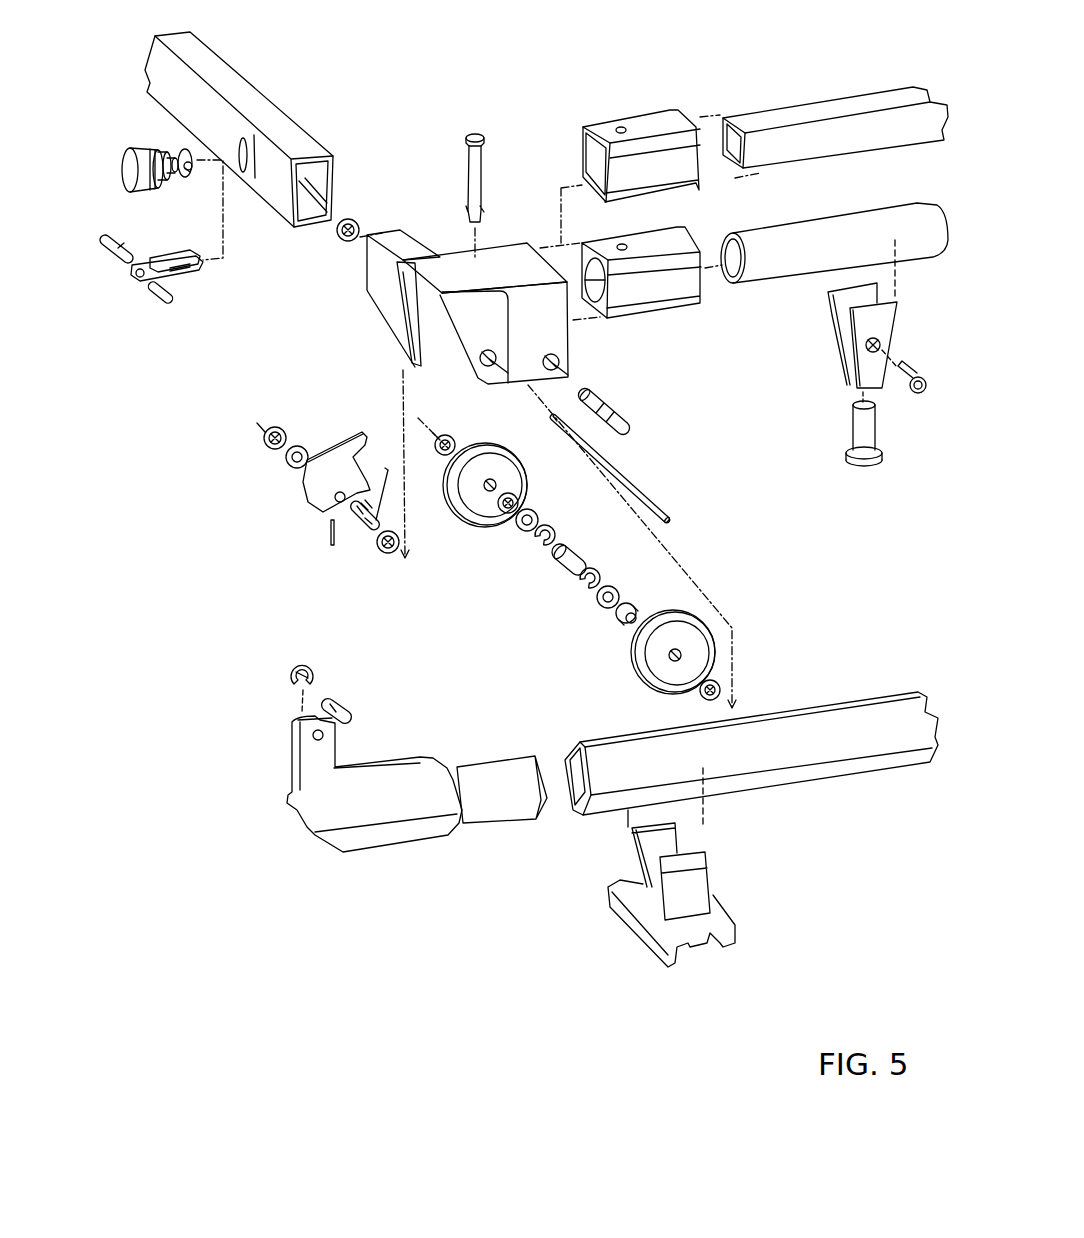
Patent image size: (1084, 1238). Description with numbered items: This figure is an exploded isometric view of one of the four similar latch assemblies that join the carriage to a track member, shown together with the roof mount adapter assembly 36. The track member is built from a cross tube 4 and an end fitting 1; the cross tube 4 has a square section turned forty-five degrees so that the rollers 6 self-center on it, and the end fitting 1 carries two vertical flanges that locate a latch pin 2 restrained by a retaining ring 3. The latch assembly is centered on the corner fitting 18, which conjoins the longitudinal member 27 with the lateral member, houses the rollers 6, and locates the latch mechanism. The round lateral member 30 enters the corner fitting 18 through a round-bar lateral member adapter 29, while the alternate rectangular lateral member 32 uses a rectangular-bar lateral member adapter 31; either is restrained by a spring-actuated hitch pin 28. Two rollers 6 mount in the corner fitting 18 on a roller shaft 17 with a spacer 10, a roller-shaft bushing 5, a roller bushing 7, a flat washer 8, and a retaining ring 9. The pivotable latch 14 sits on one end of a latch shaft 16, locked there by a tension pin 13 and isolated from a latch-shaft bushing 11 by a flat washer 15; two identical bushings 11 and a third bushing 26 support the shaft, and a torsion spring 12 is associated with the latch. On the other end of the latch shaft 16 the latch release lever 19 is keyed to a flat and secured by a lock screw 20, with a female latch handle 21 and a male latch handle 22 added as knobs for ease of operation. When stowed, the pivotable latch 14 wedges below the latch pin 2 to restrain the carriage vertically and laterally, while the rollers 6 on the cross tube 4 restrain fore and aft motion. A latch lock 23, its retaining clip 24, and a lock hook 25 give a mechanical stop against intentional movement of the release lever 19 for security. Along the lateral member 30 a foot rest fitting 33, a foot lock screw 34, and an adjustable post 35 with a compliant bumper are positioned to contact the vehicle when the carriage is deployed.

The end fitting 1 is at (295, 807).
The latch pin 2 is at (340, 702).
The retaining ring 3 is at (297, 665).
The cross tube 4 is at (840, 768).
The bushing, roller shaft 5 is at (447, 435).
The roller 6 is at (470, 513).
The bushing, roller 7 is at (520, 502).
The flat washer, roller shaft 8 is at (538, 520).
The retaining ring, roller shaft 9 is at (542, 548).
The spacer, roller shaft 10 is at (573, 552).
The bushing, latch shaft 11 is at (267, 443).
The torsion spring, latch 12 is at (365, 528).
The tension pin 13 is at (328, 533).
The pivotable latch 14 is at (317, 495).
The flat washer, latch 15 is at (290, 463).
The latch shaft 16 is at (650, 500).
The roller shaft 17 is at (607, 402).
The corner fitting 18 is at (380, 305).
The latch release lever 19 is at (185, 277).
The lock screw 20 is at (180, 253).
The latch handle, female 21 is at (157, 297).
The latch handle, male 22 is at (123, 260).
The latch lock 23 is at (125, 157).
The retaining clip, latch lock 24 is at (160, 153).
The lock hook 25 is at (187, 177).
The bushing, latch shaft 26 is at (340, 242).
The longitudinal member 27 is at (273, 113).
The hitch pin 28 is at (468, 132).
The lateral member adapter, round bar 29 is at (643, 298).
The lateral member, round 30 is at (772, 275).
The lateral member adapter, rectangular bar 31 is at (670, 117).
The lateral member, rectangular 32 is at (807, 105).
The foot rest fitting 33 is at (840, 350).
The lock screw, foot 34 is at (907, 367).
The adjustable post 35 is at (873, 423).
The roof mount adapter assembly 36 is at (712, 922).